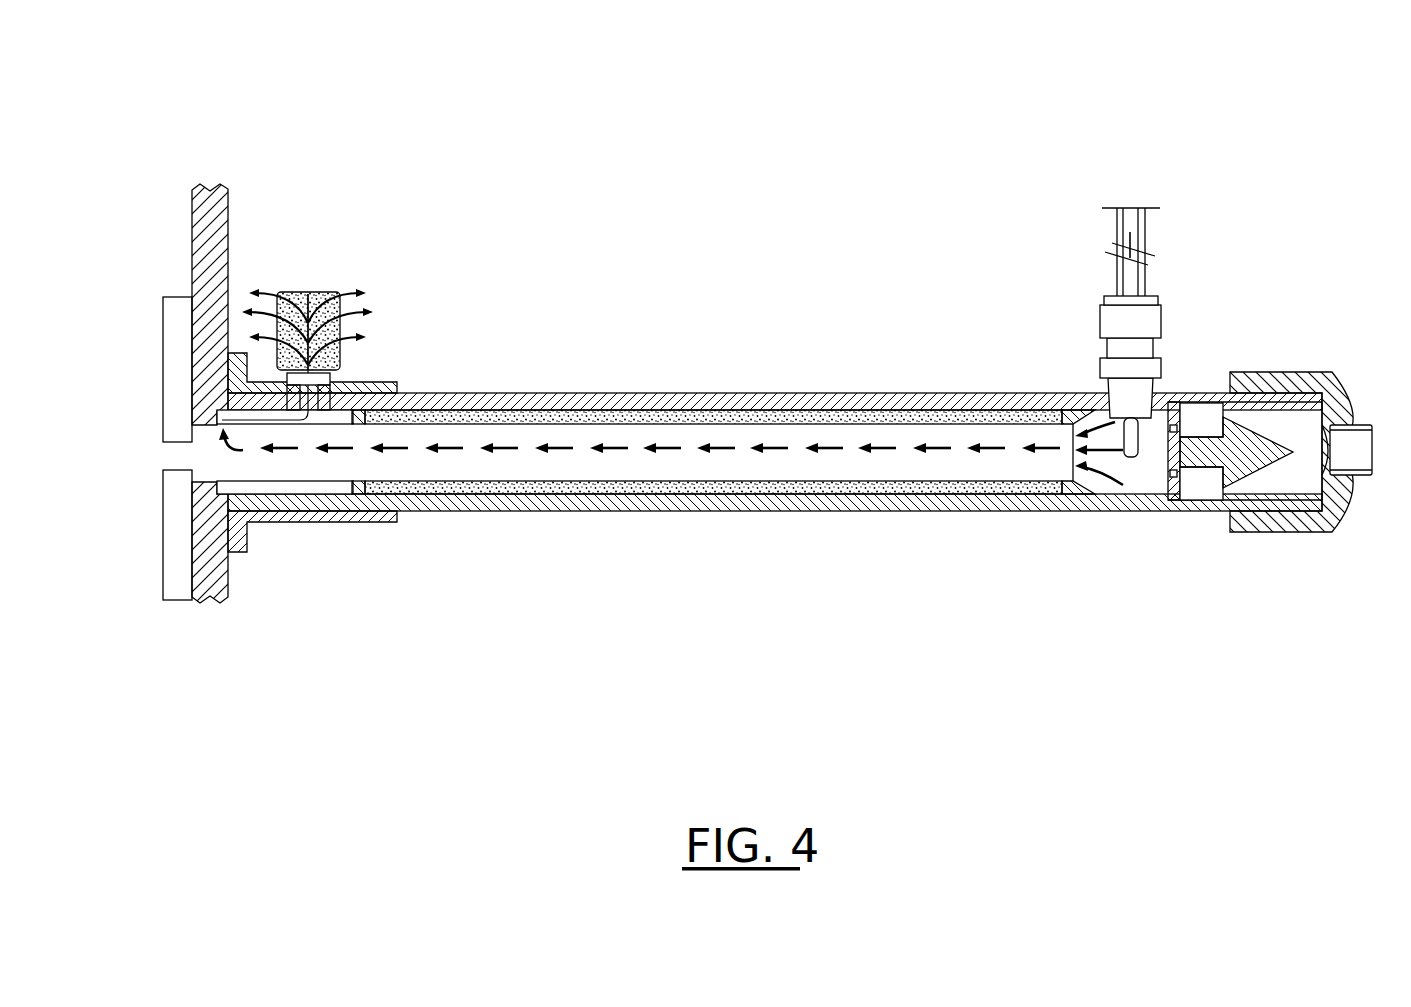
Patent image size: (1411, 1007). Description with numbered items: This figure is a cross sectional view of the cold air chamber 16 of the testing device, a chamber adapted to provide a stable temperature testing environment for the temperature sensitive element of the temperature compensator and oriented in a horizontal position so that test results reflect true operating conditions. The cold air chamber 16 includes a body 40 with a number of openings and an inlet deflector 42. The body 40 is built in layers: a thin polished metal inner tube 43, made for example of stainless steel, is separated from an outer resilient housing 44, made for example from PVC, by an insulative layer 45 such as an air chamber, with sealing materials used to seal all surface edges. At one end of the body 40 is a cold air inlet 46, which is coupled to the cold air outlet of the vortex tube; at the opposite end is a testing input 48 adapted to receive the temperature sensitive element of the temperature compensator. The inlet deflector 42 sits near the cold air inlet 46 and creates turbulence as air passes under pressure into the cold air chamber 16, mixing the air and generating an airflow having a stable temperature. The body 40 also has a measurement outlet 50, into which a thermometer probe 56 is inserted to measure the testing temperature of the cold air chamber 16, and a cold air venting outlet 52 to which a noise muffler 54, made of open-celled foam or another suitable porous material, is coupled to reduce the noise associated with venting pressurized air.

The cold air chamber 16 is at (883, 157).
The body 40 is at (769, 452).
The inlet deflector 42 is at (1241, 440).
The inner tube 43 is at (648, 423).
The outer resilient housing 44 is at (767, 400).
The insulative layer 45 is at (873, 413).
The cold air inlet 46 is at (1362, 450).
The testing input 48 is at (143, 458).
The measurement outlet 50 is at (1102, 390).
The cold air venting outlet 52 is at (338, 375).
The noise muffler 54 is at (307, 290).
The thermometer probe 56 is at (1115, 230).